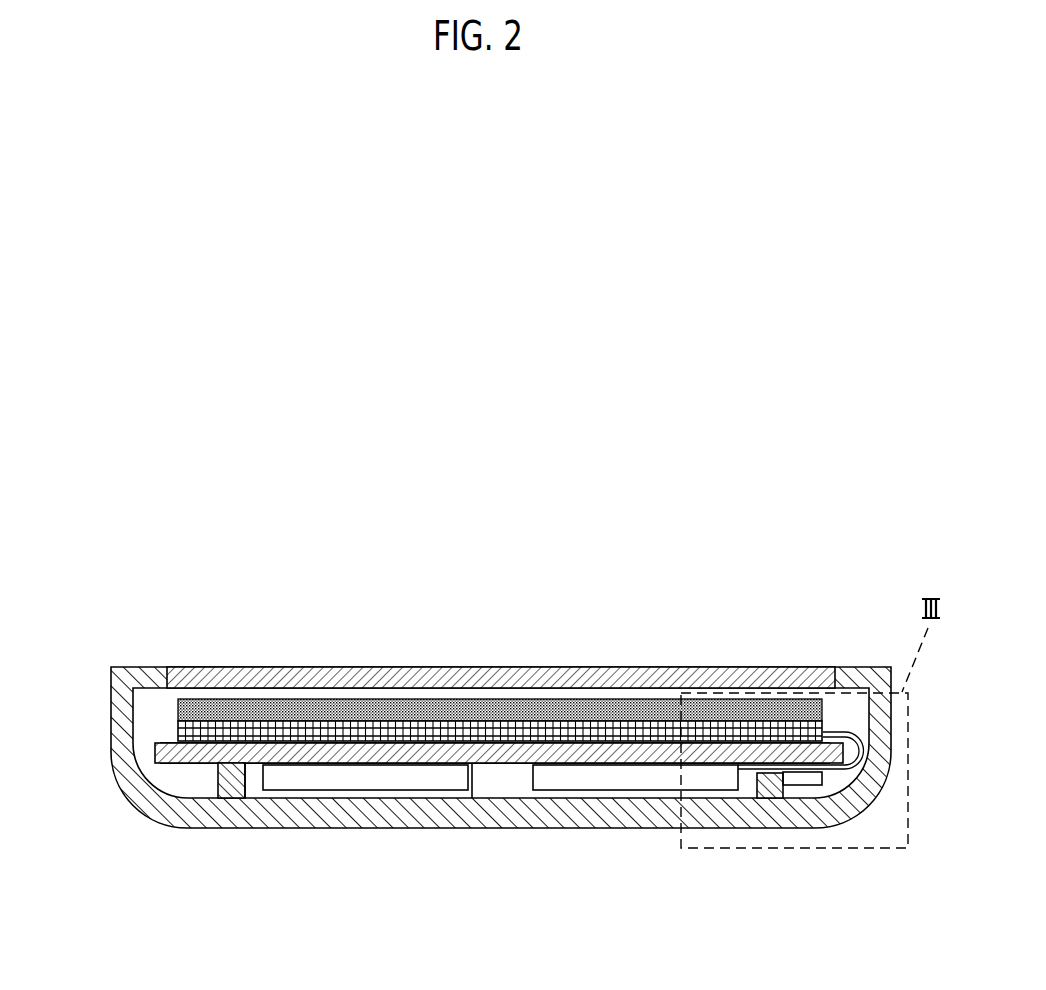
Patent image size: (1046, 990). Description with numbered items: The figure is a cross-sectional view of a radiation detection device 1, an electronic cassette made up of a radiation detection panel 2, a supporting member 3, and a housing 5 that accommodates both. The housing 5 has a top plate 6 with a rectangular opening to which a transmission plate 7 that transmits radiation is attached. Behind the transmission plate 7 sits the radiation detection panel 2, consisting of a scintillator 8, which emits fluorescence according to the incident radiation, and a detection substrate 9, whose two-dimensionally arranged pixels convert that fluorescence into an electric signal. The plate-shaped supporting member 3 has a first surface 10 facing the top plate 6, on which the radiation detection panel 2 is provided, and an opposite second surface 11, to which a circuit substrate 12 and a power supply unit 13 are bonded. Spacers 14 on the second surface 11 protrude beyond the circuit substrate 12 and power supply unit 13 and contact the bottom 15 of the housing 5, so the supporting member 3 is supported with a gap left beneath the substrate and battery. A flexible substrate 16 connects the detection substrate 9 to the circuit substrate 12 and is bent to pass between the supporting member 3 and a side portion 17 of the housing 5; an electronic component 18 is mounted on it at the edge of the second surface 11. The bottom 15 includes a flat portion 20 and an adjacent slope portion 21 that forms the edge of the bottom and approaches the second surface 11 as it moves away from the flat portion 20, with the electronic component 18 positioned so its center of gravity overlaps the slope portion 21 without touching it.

The radiation detection device 1 is at (128, 491).
The radiation detection panel 2 is at (797, 627).
The supporting member 3 is at (156, 752).
The housing 5 is at (112, 660).
The top plate 6 is at (145, 667).
The transmission plate 7 is at (218, 667).
The scintillator 8 is at (785, 730).
The detection substrate 9 is at (707, 710).
The first surface 10 is at (168, 743).
The second surface 11 is at (170, 765).
The circuit substrate 12 is at (628, 787).
The power supply unit 13 is at (367, 790).
The spacers 14 is at (237, 793).
The bottom 15 is at (873, 885).
The flexible substrate 16 is at (865, 751).
The side portion 17 is at (892, 708).
The electronic component 18 is at (817, 777).
The flat portion 20 is at (742, 818).
The slope portion 21 is at (828, 788).